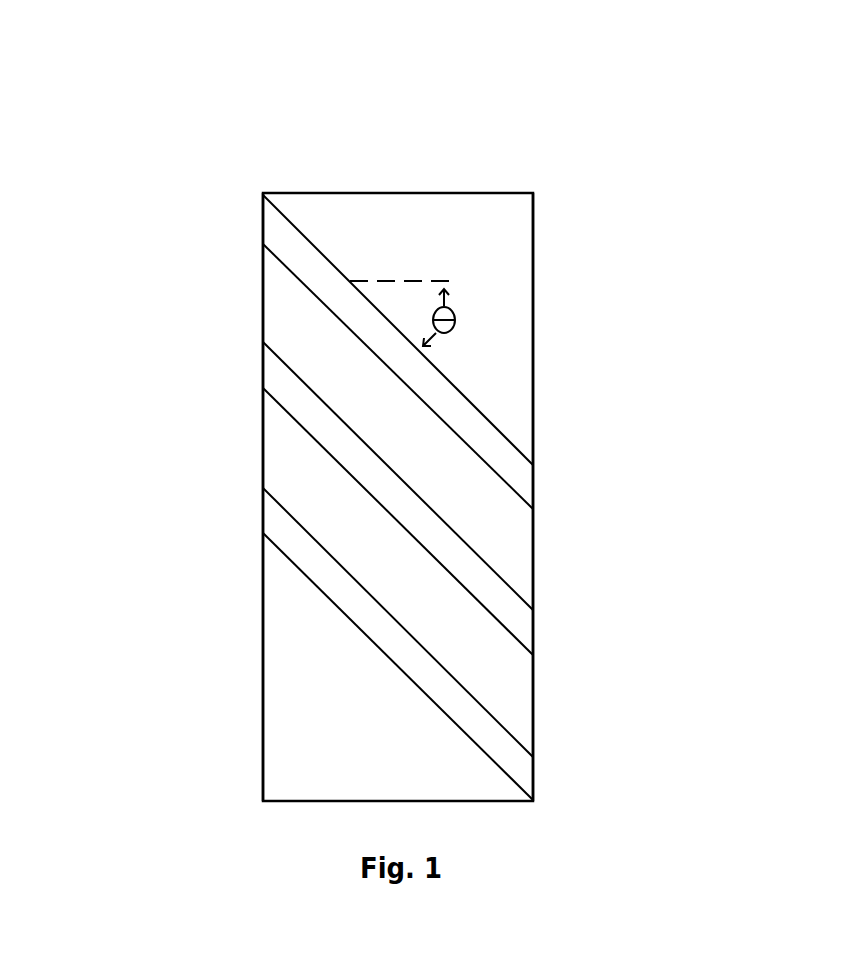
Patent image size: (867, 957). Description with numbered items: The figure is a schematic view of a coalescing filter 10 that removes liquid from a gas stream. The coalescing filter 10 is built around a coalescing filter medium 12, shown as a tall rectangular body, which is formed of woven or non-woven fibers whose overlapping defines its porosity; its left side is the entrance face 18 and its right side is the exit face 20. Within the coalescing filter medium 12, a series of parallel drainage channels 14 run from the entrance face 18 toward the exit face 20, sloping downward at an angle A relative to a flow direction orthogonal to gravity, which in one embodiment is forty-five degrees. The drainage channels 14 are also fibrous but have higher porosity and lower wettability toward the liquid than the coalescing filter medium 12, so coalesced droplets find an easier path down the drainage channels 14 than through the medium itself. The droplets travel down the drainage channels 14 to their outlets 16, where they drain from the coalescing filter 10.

The coalescing filter 10 is at (343, 107).
The coalescing filter medium 12 is at (483, 233).
The drainage channels 14 is at (498, 455).
The outlets 16 is at (537, 635).
The entrance face 18 is at (263, 281).
The exit face 20 is at (537, 282).
The downward angle A is at (465, 325).